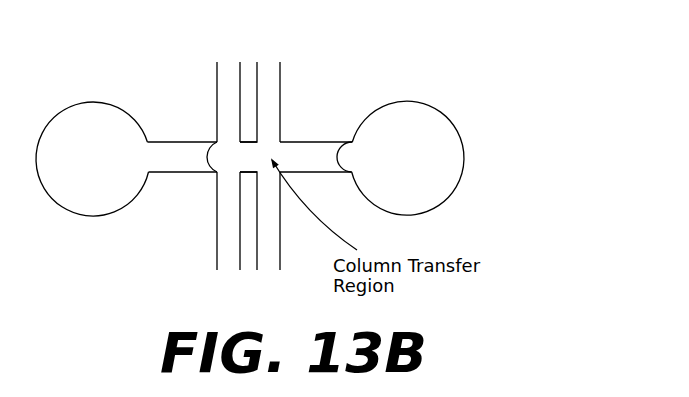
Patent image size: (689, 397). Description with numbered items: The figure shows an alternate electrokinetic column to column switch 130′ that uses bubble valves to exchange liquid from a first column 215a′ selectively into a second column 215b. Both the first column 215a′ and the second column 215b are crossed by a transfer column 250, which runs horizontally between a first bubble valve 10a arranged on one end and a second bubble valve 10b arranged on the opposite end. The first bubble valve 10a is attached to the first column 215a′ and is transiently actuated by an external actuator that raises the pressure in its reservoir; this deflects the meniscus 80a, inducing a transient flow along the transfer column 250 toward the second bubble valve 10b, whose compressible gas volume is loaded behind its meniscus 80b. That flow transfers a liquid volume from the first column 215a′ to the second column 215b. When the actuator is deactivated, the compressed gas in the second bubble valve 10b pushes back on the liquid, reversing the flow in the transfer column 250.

The first bubble valve 10a is at (118, 170).
The second bubble valve 10b is at (430, 168).
The transfer column 250 is at (178, 142).
The meniscus 80a is at (187, 172).
The meniscus 80b is at (339, 138).
The first column 215a′ is at (222, 60).
The second column 215b is at (265, 61).
The column to column switch 130′ is at (360, 50).